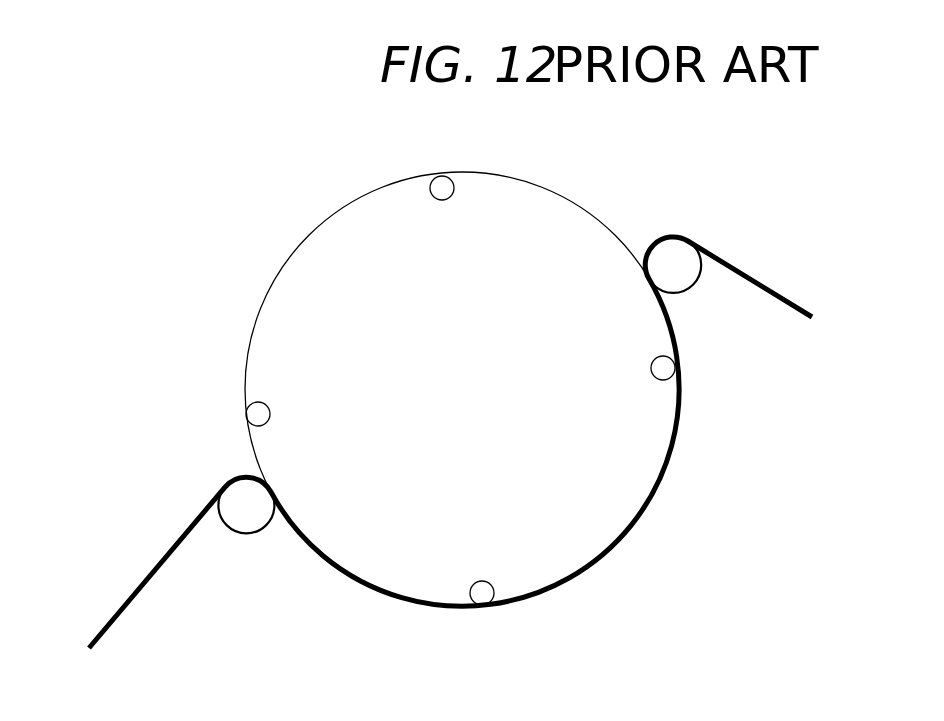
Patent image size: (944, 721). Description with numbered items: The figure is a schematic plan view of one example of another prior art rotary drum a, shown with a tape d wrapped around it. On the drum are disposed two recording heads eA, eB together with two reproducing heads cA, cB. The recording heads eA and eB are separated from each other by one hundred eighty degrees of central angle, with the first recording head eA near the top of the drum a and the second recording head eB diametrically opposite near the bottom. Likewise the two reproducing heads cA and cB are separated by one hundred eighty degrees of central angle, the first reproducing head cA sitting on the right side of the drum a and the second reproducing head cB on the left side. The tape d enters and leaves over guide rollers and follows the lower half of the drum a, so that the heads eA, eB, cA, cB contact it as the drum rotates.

The photosensitive drum a is at (565, 200).
The belt d is at (140, 588).
The recording head eA is at (443, 179).
The recording head eB is at (480, 603).
The reproducing head cA is at (678, 367).
The reproducing head cB is at (249, 414).